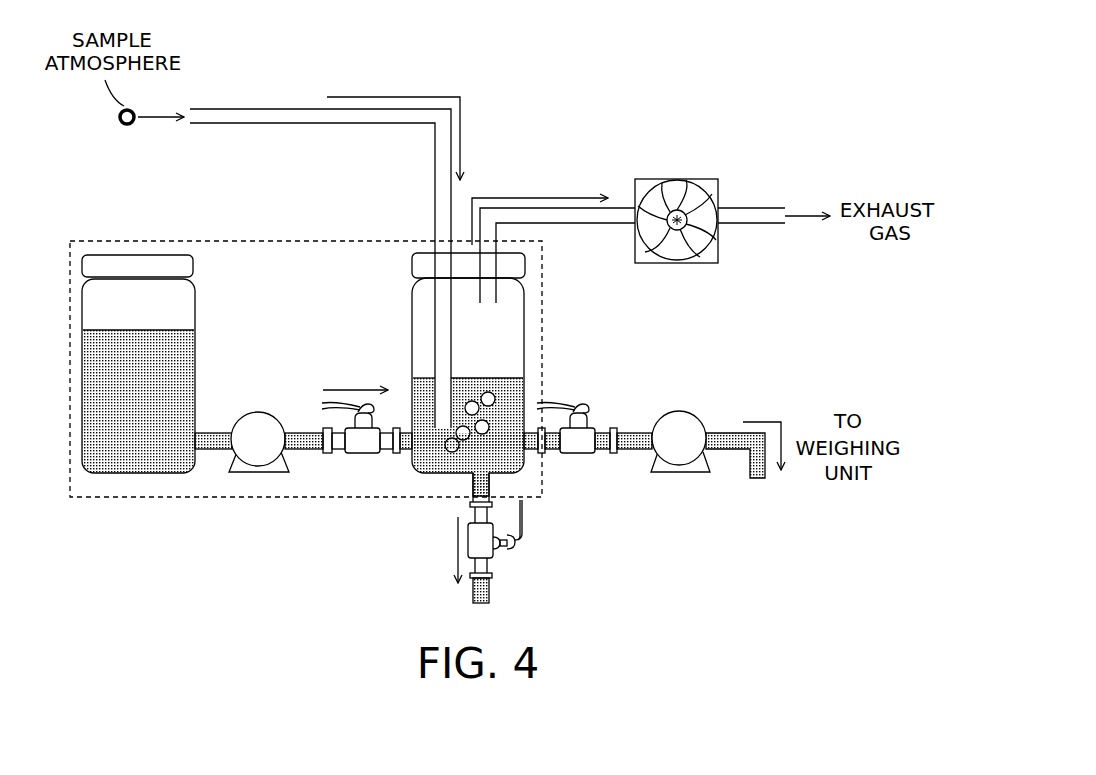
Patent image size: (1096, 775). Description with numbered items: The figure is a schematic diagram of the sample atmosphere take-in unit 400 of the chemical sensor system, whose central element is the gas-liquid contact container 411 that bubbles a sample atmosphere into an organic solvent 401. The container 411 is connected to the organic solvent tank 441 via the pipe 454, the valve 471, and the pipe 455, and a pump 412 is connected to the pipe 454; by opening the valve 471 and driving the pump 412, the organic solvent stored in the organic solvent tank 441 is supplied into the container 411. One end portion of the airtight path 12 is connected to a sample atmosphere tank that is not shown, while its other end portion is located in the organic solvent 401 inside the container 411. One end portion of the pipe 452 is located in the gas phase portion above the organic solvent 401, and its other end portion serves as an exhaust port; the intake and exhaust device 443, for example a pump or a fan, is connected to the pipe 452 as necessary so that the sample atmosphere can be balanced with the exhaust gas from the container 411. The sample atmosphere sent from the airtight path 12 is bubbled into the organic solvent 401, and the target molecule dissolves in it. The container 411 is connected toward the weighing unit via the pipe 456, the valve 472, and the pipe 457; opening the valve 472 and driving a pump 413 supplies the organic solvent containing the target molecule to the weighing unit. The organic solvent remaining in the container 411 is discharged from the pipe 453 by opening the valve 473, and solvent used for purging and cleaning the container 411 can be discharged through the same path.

The airtight path 12 is at (274, 107).
The sample atmosphere take-in unit 400 is at (92, 232).
The organic solvent 401 is at (106, 394).
The gas-liquid contact container 411 is at (527, 316).
The pump 412 is at (258, 452).
The pump 413 is at (679, 445).
The organic solvent tank 441 is at (197, 313).
The intake and exhaust device 443 is at (690, 178).
The pipe 452 is at (561, 223).
The pipe 453 is at (490, 592).
The pipe 454 is at (208, 450).
The pipe 455 is at (408, 450).
The pipe 456 is at (527, 452).
The pipe 457 is at (628, 430).
The valve 471 is at (357, 442).
The valve 472 is at (580, 443).
The valve 473 is at (484, 543).